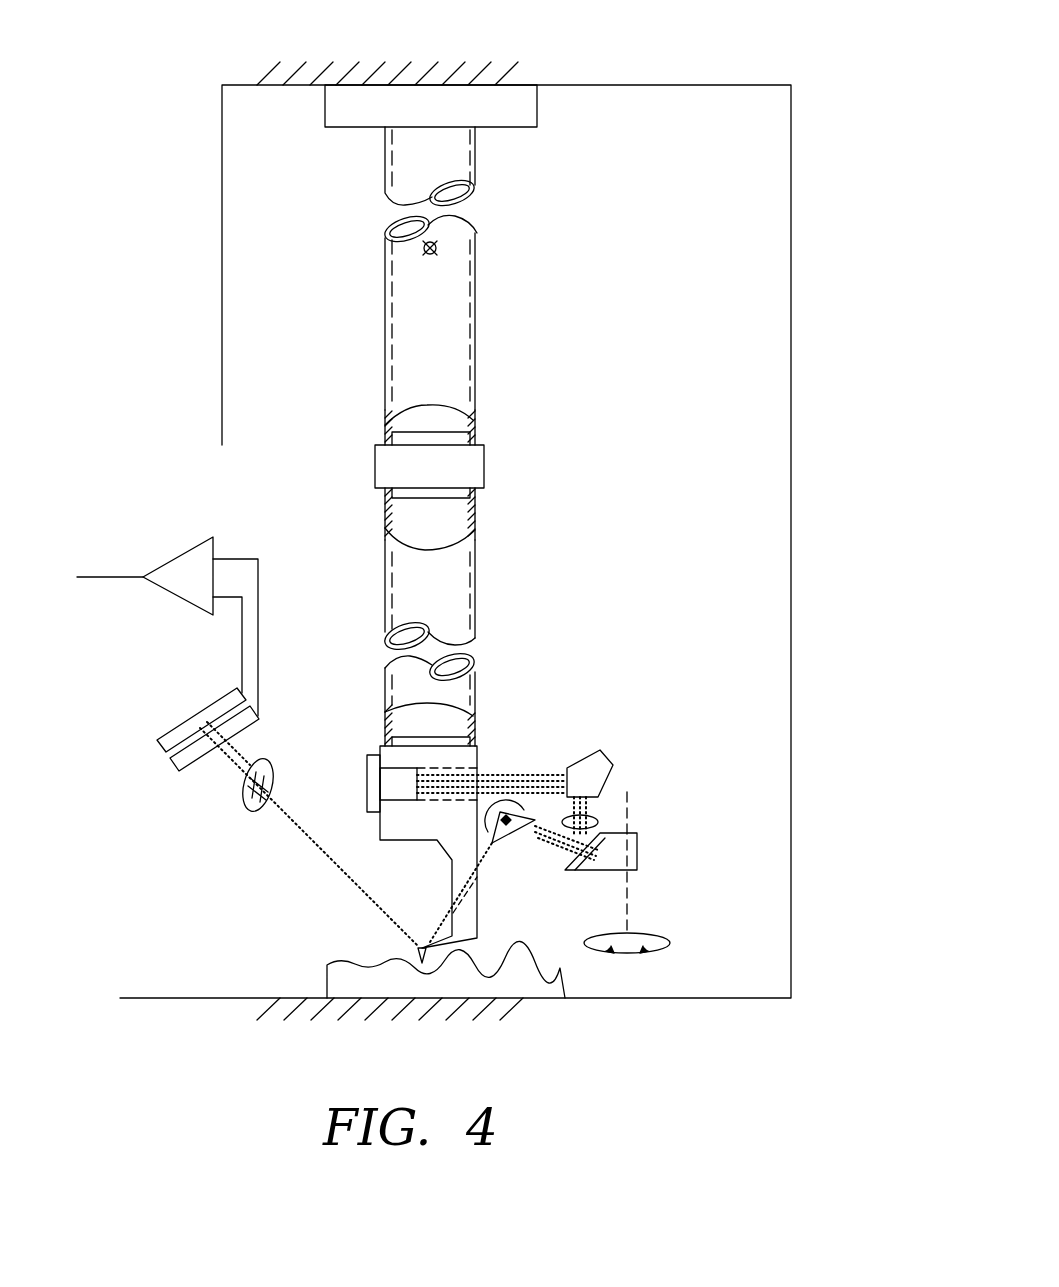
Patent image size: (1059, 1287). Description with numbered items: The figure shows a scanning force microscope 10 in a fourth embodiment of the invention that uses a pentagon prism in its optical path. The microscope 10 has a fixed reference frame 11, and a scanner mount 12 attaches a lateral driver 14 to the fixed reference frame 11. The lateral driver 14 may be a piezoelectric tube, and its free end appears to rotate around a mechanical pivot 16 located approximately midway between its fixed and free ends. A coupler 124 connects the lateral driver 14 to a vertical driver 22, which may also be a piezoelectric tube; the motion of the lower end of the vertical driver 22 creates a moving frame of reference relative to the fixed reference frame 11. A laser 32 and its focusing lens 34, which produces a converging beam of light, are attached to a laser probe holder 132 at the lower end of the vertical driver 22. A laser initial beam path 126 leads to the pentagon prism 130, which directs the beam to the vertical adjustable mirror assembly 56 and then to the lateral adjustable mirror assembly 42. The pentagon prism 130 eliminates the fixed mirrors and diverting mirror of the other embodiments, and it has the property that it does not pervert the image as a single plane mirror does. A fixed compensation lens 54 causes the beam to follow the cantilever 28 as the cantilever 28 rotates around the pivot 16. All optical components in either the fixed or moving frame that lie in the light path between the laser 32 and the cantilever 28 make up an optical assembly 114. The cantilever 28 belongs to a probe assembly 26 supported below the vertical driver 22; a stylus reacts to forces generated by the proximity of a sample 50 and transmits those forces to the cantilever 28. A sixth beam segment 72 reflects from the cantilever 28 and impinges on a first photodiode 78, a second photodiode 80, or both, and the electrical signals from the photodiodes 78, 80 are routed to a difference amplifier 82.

The microscope 10 is at (820, 132).
The fixed reference frame 11 is at (628, 85).
The scanner mount 12 is at (510, 105).
The lateral driver 14 is at (438, 368).
The mechanical pivot 16 is at (437, 245).
The vertical driver 22 is at (418, 585).
The coupler 124 is at (468, 467).
The difference amplifier 82 is at (185, 565).
The first photodiode 78 is at (165, 743).
The second photodiode 80 is at (178, 765).
The sixth beam segment 72 is at (240, 797).
The laser 32 is at (372, 777).
The laser probe holder 132 is at (385, 828).
The focusing lens 34 is at (420, 778).
The laser initial beam path 126 is at (510, 785).
The pentagon prism 130 is at (600, 750).
The fixed compensation lens 54 is at (590, 810).
The vertical adjustable mirror assembly 56 is at (645, 848).
The optical assembly 114 is at (660, 797).
The lateral adjustable mirror assembly 42 is at (515, 847).
The probe assembly 26 is at (487, 935).
The cantilever 28 is at (420, 945).
The sample 50 is at (560, 975).